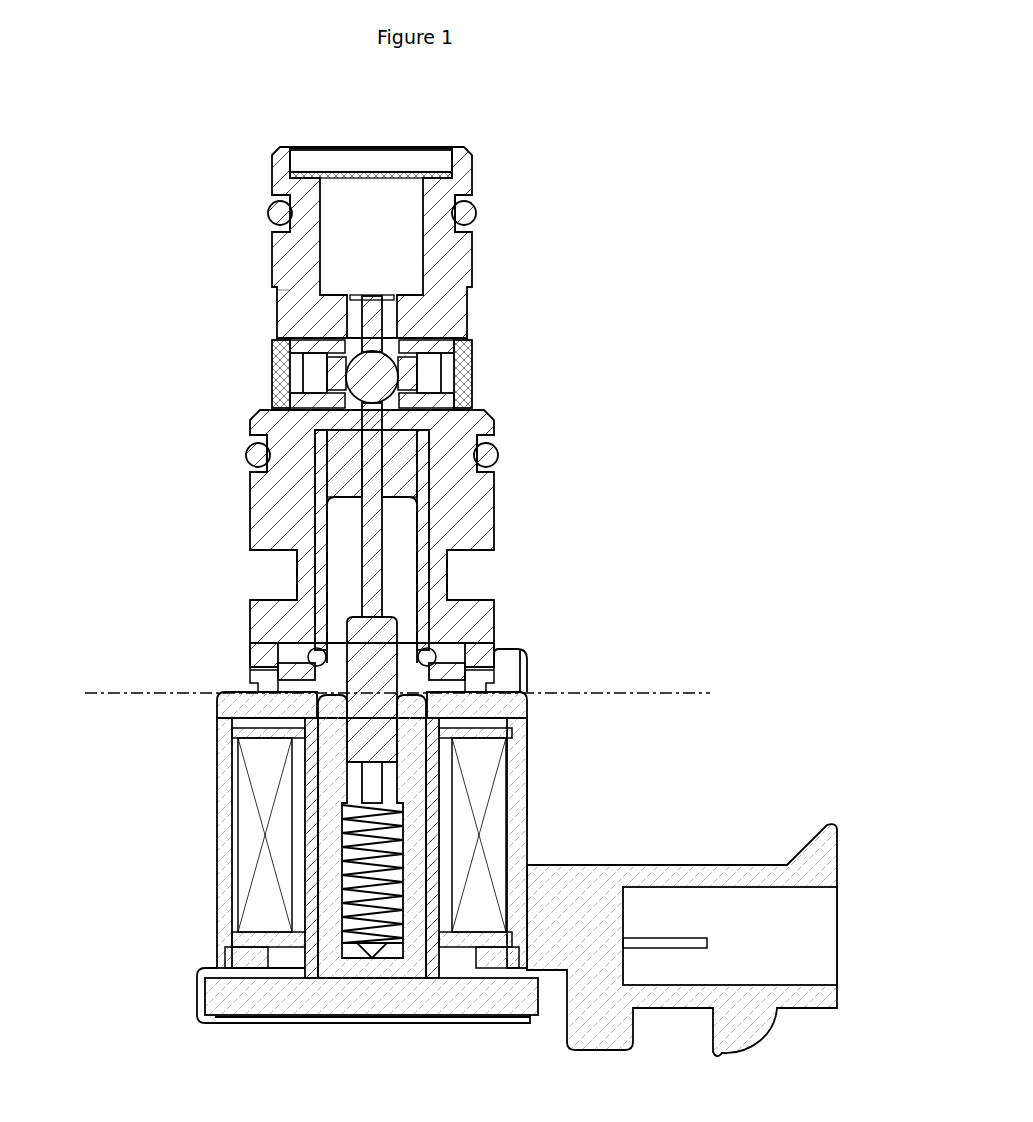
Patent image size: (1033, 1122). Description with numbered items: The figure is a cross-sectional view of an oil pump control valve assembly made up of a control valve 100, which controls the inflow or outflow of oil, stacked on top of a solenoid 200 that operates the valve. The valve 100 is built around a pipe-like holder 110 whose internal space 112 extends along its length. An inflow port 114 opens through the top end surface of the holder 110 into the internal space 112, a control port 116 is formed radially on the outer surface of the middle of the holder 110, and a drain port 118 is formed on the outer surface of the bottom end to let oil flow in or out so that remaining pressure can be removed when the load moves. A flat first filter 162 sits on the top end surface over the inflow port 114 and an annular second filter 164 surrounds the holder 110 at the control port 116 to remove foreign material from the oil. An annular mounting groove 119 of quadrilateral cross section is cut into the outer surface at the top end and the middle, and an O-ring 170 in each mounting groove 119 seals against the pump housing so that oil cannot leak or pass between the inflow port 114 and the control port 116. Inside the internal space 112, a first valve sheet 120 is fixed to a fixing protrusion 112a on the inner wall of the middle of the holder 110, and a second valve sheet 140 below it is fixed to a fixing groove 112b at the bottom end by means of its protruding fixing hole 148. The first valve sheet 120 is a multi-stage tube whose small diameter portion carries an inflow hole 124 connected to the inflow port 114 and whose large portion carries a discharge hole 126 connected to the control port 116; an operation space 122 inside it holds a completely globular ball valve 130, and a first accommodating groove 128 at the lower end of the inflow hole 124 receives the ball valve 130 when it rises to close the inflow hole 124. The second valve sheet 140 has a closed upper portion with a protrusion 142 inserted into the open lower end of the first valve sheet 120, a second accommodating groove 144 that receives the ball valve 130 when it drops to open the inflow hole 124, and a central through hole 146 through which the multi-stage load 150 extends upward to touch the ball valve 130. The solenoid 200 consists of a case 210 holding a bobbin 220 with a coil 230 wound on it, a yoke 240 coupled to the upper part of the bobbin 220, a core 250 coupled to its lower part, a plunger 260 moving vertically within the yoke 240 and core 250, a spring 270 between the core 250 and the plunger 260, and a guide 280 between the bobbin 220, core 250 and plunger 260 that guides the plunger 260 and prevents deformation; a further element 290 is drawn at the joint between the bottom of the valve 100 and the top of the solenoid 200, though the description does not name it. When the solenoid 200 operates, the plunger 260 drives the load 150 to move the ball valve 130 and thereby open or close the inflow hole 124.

The control valve 100 is at (84, 674).
The solenoid 200 is at (84, 719).
The holder 110 is at (480, 540).
The internal space 112 is at (460, 420).
The fixing protrusion 112a is at (320, 290).
The fixing groove 112b is at (435, 615).
The inflow port 114 is at (405, 160).
The control port 116 is at (430, 367).
The drain port 118 is at (280, 660).
The mounting groove 119 is at (474, 232).
The first valve sheet 120 is at (470, 340).
The operation space 122 is at (275, 345).
The inflow hole 124 is at (400, 318).
The discharge hole 126 is at (455, 405).
The first accommodating groove 128 is at (455, 353).
The ball valve 130 is at (350, 395).
The second valve sheet 140 is at (265, 510).
The protrusion 142 is at (258, 448).
The second accommodating groove 144 is at (430, 510).
The through hole 146 is at (320, 470).
The fixing hole 148 is at (305, 612).
The load 150 is at (382, 580).
The first filter 162 is at (325, 172).
The second filter 164 is at (277, 372).
The O-ring 170 is at (476, 212).
The case 210 is at (222, 740).
The bobbin 220 is at (500, 850).
The coil 230 is at (510, 797).
The yoke 240 is at (430, 712).
The core 250 is at (285, 1000).
The plunger 260 is at (330, 783).
The spring 270 is at (360, 900).
The guide 280 is at (318, 862).
The seal 290 is at (520, 690).